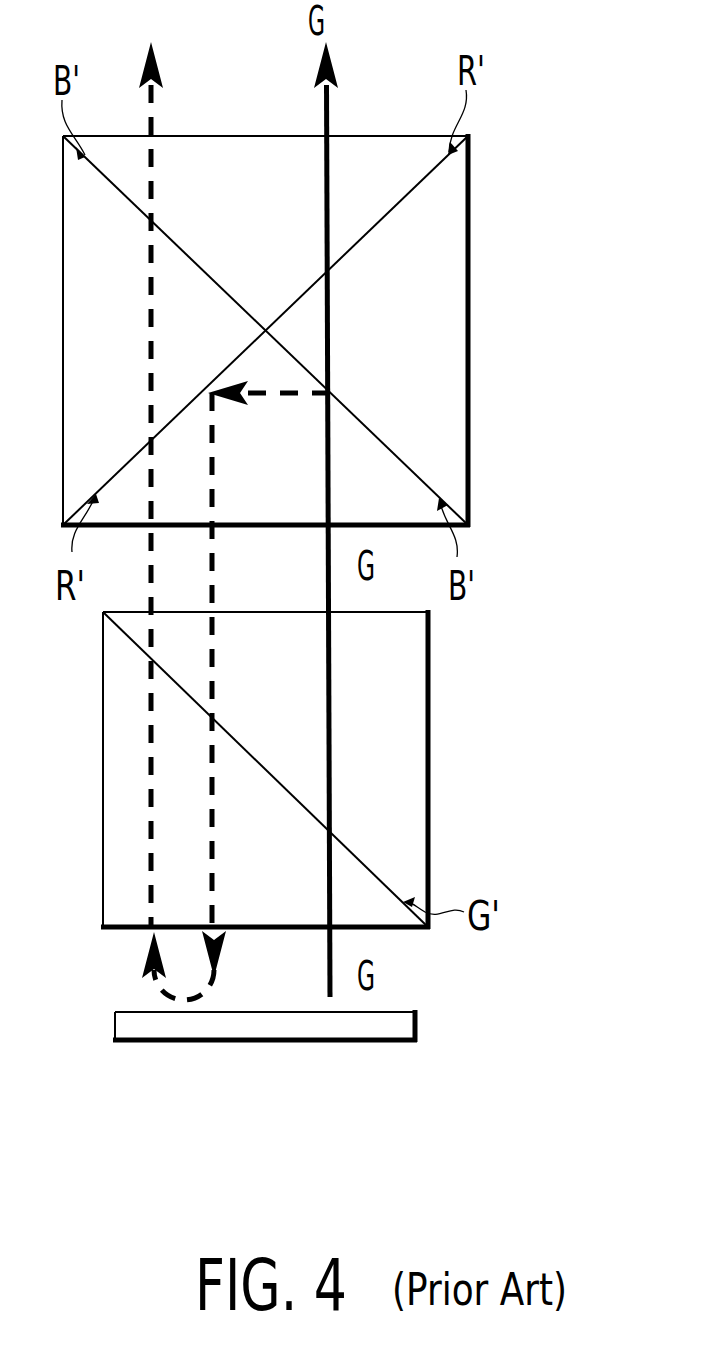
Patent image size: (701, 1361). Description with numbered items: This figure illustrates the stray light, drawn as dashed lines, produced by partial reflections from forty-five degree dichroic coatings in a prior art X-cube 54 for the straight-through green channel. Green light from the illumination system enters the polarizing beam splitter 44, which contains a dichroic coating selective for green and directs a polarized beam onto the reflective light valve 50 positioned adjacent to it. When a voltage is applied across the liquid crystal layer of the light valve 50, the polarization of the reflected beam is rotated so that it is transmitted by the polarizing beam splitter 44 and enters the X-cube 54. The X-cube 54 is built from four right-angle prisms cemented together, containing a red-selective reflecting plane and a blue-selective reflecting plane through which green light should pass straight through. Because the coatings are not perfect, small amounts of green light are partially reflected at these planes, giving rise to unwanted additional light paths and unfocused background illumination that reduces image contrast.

The X-cube 54 is at (468, 333).
The polarizing beam splitter 44 is at (428, 770).
The reflective light valve 50 is at (262, 1042).